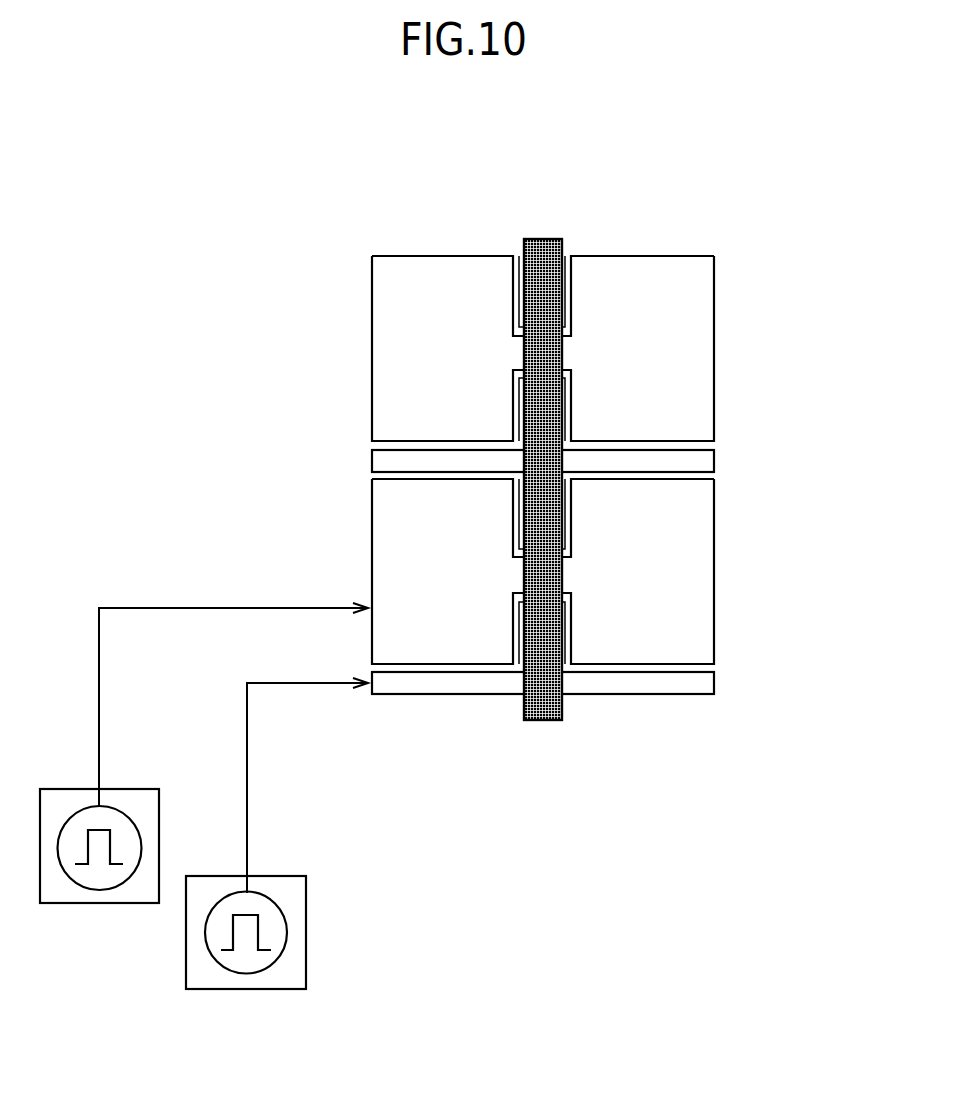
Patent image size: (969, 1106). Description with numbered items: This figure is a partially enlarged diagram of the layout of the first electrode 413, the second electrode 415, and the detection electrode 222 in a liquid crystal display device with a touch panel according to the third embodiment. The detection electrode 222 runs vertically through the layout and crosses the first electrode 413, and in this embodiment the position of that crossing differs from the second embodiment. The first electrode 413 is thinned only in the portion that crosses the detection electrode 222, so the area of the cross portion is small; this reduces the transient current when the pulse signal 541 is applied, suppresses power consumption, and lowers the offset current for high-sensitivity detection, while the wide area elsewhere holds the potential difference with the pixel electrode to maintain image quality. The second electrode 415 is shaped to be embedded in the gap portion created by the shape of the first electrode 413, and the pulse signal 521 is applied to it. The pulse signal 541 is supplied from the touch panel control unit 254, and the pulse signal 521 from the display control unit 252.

The detection electrode 222 is at (543, 255).
The first electrode 413 is at (703, 359).
The second electrode 415 is at (703, 463).
The touch panel control unit 254 is at (127, 789).
The pulse signal 541 is at (70, 817).
The display control unit 252 is at (306, 965).
The pulse signal 521 is at (286, 921).